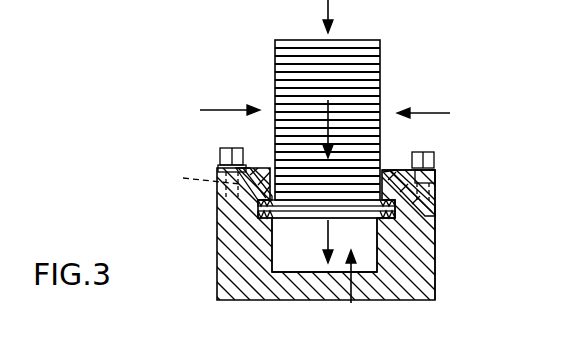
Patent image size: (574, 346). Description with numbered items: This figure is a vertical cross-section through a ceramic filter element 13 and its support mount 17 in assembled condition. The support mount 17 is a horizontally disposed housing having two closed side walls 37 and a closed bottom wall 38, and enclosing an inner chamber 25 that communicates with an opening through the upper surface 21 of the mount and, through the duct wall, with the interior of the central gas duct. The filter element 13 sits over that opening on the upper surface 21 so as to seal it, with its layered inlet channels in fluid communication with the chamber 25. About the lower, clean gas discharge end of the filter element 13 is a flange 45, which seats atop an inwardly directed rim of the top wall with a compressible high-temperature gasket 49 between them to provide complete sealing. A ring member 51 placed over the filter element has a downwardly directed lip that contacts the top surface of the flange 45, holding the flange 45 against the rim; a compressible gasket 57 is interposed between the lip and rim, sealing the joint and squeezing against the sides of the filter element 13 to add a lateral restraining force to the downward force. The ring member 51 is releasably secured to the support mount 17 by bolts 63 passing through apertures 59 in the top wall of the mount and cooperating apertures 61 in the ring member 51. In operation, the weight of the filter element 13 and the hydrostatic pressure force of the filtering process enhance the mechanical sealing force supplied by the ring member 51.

The ceramic filter element 13 is at (292, 72).
The support mount 17 is at (452, 208).
The upper surface 21 is at (444, 176).
The inner chamber 25 is at (352, 292).
The side walls 37 is at (225, 276).
The bottom wall 38 is at (316, 297).
The flange 45 is at (392, 226).
The gasket 49 is at (275, 214).
The ring member 51 is at (235, 170).
The compressible gasket 57 is at (262, 203).
The apertures 59 is at (196, 181).
The apertures 61 is at (238, 166).
The bolts 63 is at (222, 150).